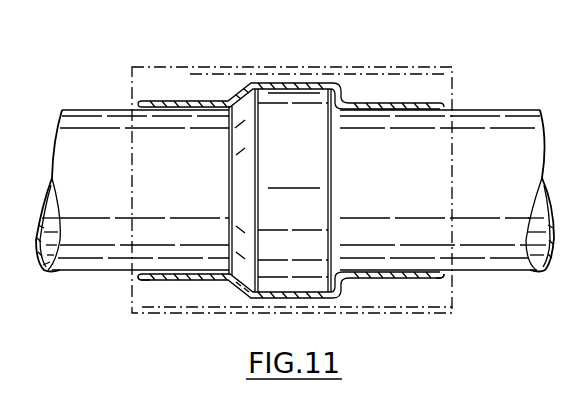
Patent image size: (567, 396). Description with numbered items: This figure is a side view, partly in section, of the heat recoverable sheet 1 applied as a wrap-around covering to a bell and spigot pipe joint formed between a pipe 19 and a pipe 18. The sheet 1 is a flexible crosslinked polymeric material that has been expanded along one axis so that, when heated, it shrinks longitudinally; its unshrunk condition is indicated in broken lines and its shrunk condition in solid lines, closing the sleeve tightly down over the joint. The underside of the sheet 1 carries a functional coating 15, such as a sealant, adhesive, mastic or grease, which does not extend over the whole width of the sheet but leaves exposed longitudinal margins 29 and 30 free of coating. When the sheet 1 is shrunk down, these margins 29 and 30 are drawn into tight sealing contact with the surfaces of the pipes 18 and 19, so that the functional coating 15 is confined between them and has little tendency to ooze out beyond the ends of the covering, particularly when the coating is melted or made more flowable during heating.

The heat recoverable sheet 1 is at (205, 67).
The functional coating 15 is at (381, 276).
The pipe 18 is at (90, 108).
The pipe 19 is at (496, 108).
The exposed longitudinal margin 29 is at (137, 283).
The exposed longitudinal margin 30 is at (444, 276).